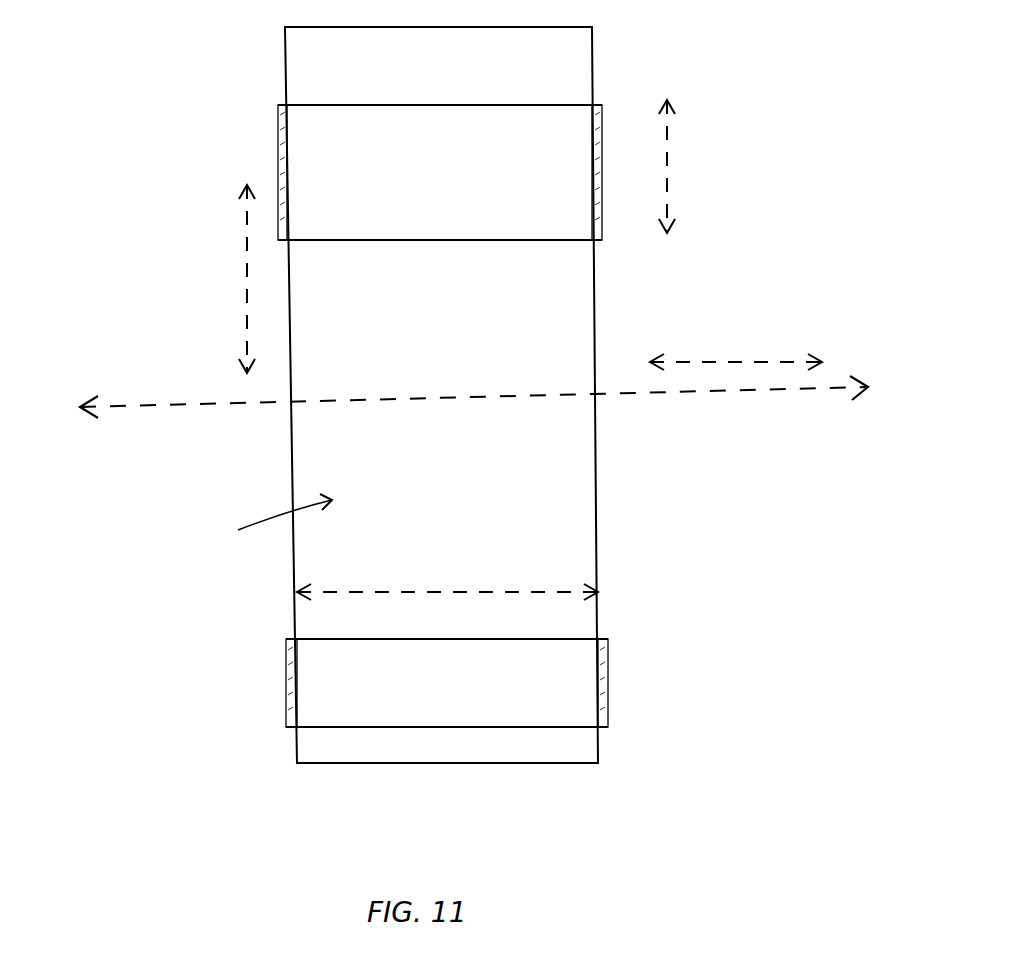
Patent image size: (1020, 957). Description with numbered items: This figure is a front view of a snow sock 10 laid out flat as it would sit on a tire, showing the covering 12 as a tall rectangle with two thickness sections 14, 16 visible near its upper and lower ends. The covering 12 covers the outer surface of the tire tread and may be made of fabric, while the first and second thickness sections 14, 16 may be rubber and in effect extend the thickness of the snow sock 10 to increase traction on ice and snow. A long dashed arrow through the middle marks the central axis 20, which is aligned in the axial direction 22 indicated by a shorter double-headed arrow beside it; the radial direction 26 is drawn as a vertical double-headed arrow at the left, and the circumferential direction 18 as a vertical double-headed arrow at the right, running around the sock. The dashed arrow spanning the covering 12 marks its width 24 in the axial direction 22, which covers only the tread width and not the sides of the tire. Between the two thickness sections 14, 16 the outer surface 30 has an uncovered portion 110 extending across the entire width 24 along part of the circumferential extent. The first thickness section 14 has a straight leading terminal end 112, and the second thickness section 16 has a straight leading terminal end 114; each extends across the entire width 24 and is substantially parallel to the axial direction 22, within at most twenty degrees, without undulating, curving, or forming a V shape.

The snow sock 10 is at (583, 55).
The covering 12 is at (582, 325).
The first thickness section 14 is at (578, 181).
The second thickness section 16 is at (583, 683).
The circumferential direction 18 is at (665, 141).
The central axis 20 is at (726, 395).
The axial direction 22 is at (715, 352).
The width 24 is at (460, 590).
The radial direction 26 is at (245, 245).
The outer surface 30 is at (263, 520).
The uncovered portion 110 is at (570, 495).
The leading terminal end 112 is at (437, 244).
The leading terminal end 114 is at (431, 730).